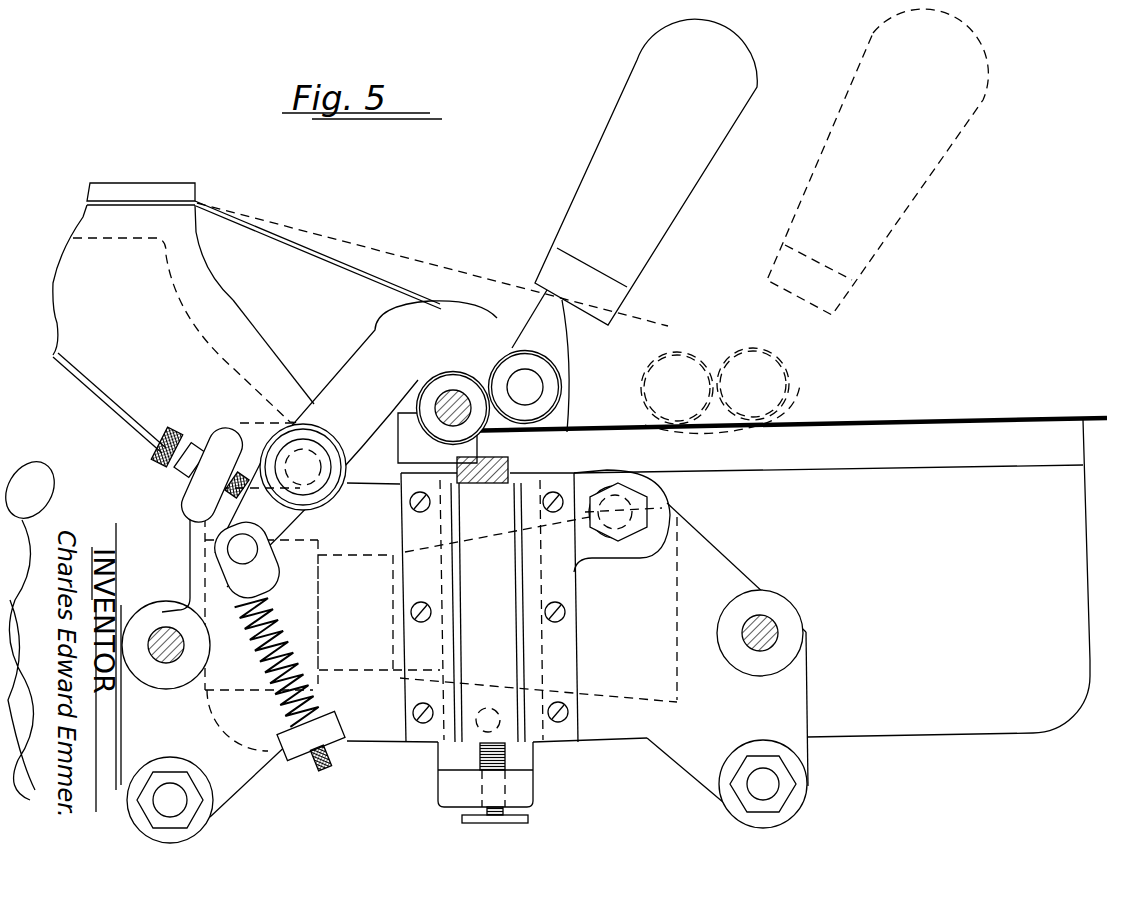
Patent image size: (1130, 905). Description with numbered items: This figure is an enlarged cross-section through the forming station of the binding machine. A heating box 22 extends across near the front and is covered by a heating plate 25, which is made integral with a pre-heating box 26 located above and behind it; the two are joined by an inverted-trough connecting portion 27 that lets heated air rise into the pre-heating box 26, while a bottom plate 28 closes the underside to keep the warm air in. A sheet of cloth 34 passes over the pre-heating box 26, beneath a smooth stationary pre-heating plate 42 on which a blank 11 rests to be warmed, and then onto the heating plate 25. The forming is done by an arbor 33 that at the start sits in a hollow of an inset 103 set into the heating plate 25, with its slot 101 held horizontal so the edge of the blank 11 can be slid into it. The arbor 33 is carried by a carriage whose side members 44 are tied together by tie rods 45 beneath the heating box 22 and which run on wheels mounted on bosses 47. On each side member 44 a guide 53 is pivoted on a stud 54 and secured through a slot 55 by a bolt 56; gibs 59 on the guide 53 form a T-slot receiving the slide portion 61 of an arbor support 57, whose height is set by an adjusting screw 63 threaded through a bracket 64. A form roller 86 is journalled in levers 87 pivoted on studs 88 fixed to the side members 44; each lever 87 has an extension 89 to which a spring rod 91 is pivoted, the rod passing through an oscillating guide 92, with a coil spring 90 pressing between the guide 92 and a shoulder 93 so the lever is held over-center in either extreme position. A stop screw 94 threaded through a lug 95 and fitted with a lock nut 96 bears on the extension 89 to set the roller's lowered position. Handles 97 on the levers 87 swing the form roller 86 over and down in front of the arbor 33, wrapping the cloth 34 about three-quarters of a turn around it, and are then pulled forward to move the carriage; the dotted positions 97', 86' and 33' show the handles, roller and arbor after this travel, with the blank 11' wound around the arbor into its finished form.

The blank 11 is at (568, 418).
The blank in formed position 11' is at (819, 381).
The heating box 22 is at (603, 618).
The heating plate 25 is at (876, 447).
The pre-heating box 26 is at (70, 303).
The connecting portion 27 is at (213, 367).
The bottom plate 28 is at (122, 424).
The arbor 33 is at (431, 403).
The arbor in forward position 33' is at (682, 363).
The cloth 34 is at (360, 273).
The pre-heating plate 42 is at (182, 192).
The carriage side member 44 is at (730, 580).
The tie rod 45 is at (768, 785).
The boss 47 is at (786, 640).
The guide 53 is at (760, 473).
The stud 54 is at (447, 777).
The slot 55 is at (597, 503).
The bolt 56 is at (628, 500).
The arbor support 57 is at (568, 420).
The gib 59 is at (410, 722).
The slide portion 61 is at (480, 703).
The adjusting screw 63 is at (530, 817).
The bracket 64 is at (517, 788).
The form roller 86 is at (556, 381).
The form roller in forward position 86' is at (753, 383).
The lever 87 is at (370, 357).
The stud 88 is at (298, 460).
The extension 89 is at (187, 527).
The coil spring 90 is at (313, 712).
The spring rod 91 is at (320, 771).
The guide 92 is at (306, 750).
The shoulder 93 is at (273, 582).
The stop screw 94 is at (177, 470).
The lug 95 is at (197, 497).
The lock nut 96 is at (197, 473).
The handle 97 is at (642, 172).
The handle in forward position 97' is at (866, 162).
The slot 101 is at (447, 448).
The inset 103 is at (407, 417).